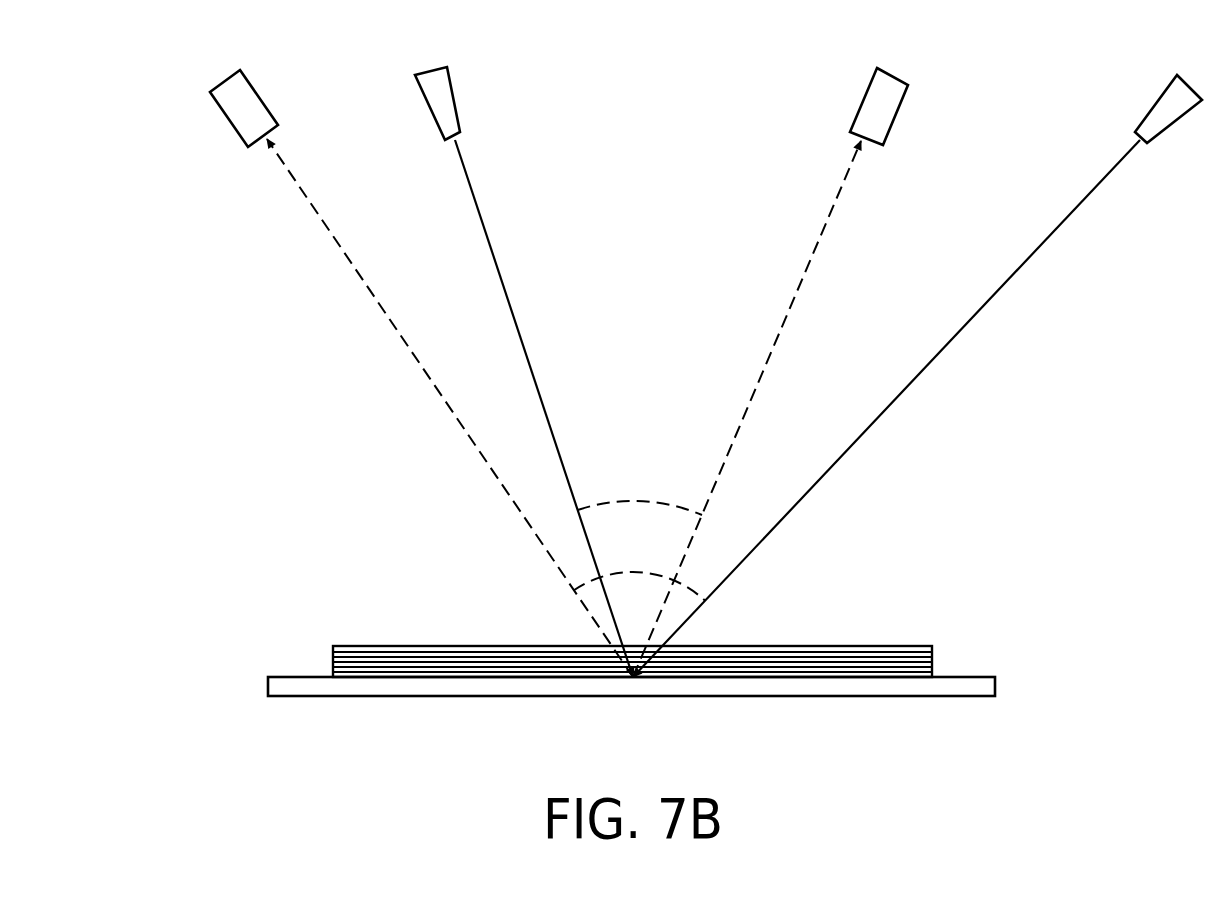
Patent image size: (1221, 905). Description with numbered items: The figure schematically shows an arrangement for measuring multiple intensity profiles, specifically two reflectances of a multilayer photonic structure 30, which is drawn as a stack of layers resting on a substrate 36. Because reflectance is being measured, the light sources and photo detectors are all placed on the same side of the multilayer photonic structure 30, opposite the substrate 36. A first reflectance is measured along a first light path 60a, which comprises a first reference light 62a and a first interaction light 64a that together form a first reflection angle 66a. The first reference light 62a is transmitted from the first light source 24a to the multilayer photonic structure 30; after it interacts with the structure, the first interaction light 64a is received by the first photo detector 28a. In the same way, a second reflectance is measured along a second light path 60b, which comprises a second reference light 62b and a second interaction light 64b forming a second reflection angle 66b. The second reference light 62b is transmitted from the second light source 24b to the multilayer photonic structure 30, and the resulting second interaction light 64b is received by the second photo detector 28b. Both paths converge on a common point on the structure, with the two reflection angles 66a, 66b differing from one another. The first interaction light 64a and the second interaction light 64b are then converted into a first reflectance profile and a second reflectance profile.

The first light source 24a is at (458, 102).
The second light source 24b is at (1158, 103).
The first photo detector 28a is at (862, 98).
The second photo detector 28b is at (268, 98).
The multilayer photonic structure 30 is at (1022, 618).
The substrate 36 is at (995, 687).
The first light path 60a is at (557, 363).
The second light path 60b is at (378, 368).
The first reference light 62a is at (497, 262).
The second reference light 62b is at (1008, 280).
The first interaction light 64a is at (795, 302).
The second interaction light 64b is at (386, 317).
The first reflection angle 66a is at (636, 500).
The second reflection angle 66b is at (700, 596).